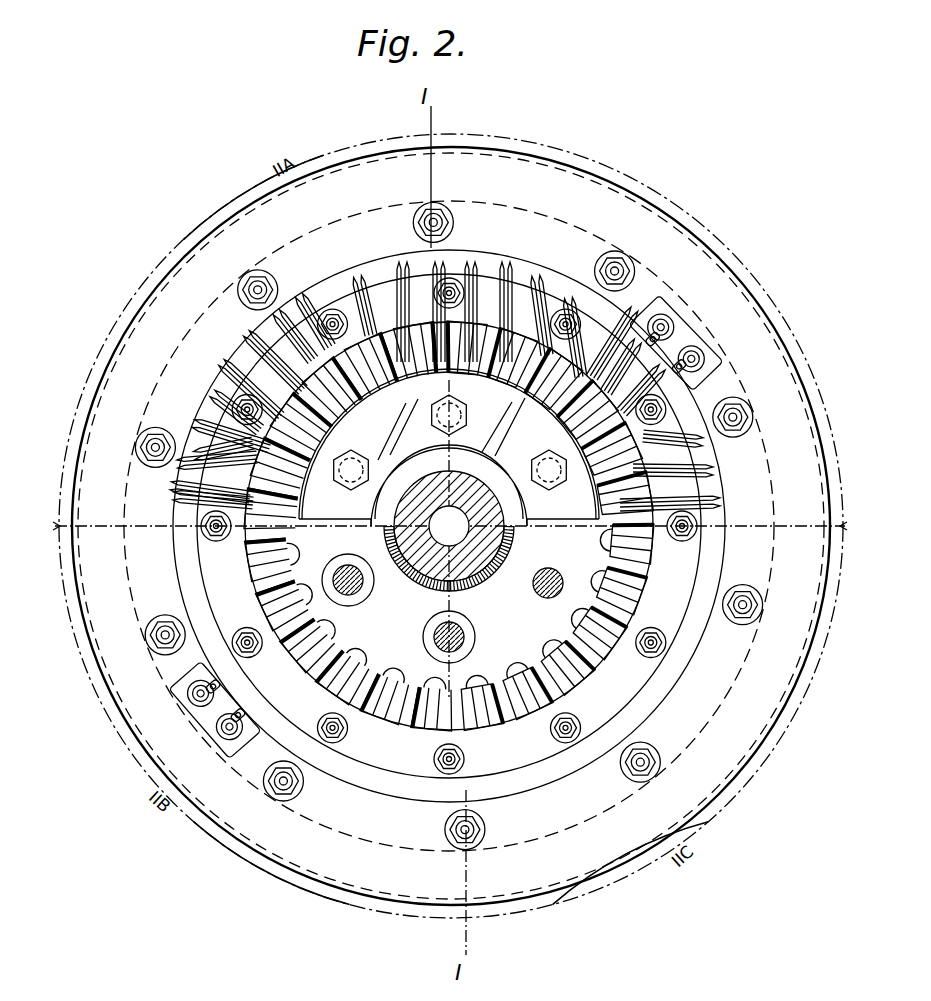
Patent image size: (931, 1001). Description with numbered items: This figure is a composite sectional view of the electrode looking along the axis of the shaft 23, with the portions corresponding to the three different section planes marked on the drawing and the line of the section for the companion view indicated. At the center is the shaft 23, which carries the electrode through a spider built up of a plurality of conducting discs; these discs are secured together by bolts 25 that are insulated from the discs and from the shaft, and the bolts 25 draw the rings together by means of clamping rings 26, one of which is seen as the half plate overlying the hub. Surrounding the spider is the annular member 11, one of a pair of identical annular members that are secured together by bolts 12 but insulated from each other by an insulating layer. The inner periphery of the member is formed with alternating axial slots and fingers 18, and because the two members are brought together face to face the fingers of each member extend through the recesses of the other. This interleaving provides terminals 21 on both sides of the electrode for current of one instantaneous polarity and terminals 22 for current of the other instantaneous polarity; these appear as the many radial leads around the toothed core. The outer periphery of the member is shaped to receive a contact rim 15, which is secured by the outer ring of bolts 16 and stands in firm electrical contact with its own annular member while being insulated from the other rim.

The annular member 11 is at (353, 743).
The bolts 12 is at (642, 653).
The contact rim 15 is at (707, 320).
The bolts 16 is at (598, 250).
The fingers 18 is at (300, 357).
The terminals 21 is at (280, 322).
The terminals 22 is at (247, 345).
The shaft 23 is at (418, 568).
The bolts 25 is at (377, 430).
The clamping rings 26 is at (562, 507).